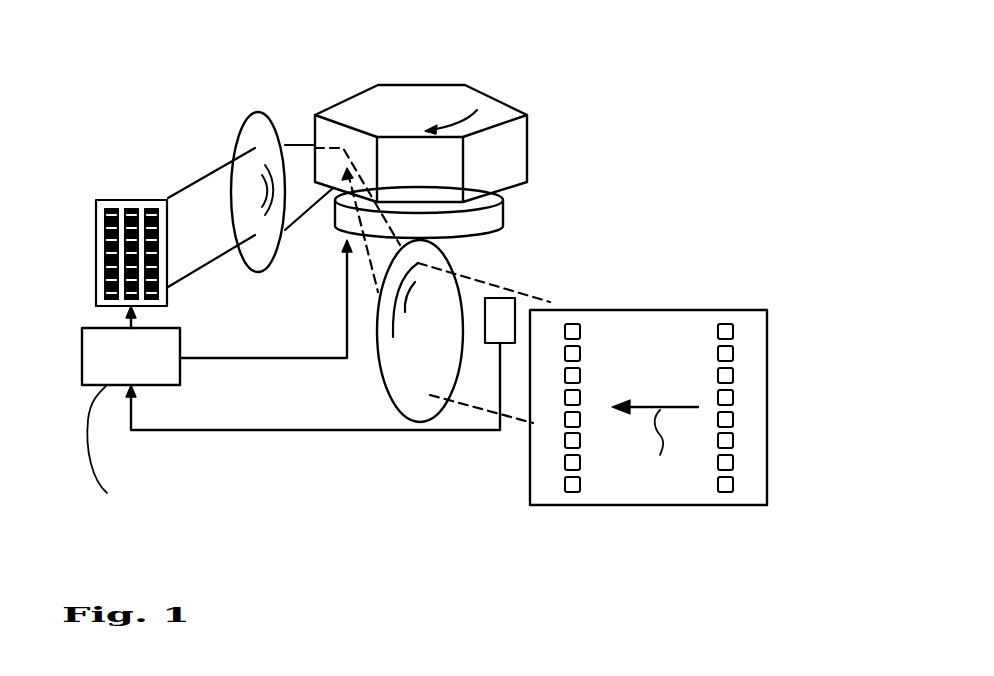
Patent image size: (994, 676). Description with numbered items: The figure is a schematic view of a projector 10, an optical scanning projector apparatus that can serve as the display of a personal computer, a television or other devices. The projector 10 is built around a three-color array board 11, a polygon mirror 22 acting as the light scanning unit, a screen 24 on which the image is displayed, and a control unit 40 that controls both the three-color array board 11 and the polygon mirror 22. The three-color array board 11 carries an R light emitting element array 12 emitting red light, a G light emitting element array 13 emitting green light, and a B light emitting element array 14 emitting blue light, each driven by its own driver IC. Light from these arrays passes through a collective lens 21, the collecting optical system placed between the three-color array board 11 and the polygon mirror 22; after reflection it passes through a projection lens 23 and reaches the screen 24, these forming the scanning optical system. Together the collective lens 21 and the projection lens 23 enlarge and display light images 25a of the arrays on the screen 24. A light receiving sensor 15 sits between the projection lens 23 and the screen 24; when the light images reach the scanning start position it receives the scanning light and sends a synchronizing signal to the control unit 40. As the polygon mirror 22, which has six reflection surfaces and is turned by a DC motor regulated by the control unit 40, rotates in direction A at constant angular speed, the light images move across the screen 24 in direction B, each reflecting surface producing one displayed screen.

The projector 10 is at (700, 122).
The three-color array board 11 is at (113, 224).
The R light emitting element array 12 is at (110, 207).
The G light emitting element array 13 is at (133, 207).
The B light emitting element array 14 is at (157, 207).
The light receiving sensor 15 is at (515, 298).
The collective lens 21 is at (262, 113).
The polygon mirror 22 is at (465, 85).
The projection lens 23 is at (407, 417).
The screen 24 is at (737, 382).
The light image 25a is at (733, 476).
The control unit 40 is at (83, 385).